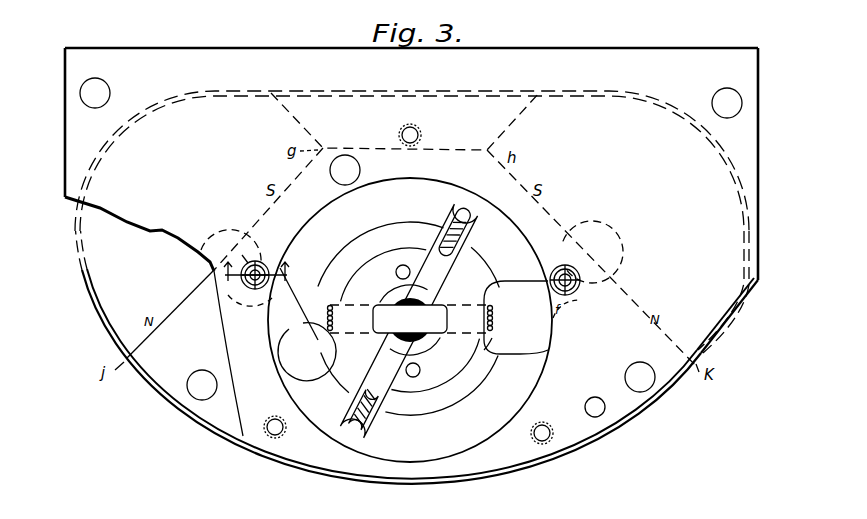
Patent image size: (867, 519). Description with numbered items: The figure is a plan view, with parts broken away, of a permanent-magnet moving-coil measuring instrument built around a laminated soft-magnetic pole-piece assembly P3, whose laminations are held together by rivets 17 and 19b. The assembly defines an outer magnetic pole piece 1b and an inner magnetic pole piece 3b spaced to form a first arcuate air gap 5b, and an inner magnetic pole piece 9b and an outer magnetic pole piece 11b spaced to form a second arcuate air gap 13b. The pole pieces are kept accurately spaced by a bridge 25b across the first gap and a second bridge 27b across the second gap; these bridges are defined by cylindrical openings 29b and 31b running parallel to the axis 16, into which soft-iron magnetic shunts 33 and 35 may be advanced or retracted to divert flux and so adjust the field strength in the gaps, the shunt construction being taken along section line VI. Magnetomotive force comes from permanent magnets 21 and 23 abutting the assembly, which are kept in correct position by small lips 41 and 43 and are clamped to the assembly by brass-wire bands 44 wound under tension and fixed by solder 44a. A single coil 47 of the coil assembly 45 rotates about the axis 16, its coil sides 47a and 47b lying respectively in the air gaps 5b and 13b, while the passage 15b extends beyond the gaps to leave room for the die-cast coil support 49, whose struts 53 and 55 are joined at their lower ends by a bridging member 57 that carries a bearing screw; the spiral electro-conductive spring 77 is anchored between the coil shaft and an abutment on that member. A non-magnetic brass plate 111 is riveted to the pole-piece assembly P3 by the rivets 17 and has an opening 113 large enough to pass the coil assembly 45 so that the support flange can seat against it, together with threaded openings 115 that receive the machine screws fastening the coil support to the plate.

The brass plate 111 is at (721, 48).
The bands 44 is at (505, 476).
The solder 44a is at (84, 292).
The permanent magnet 23 is at (714, 355).
The permanent magnet 21 is at (110, 312).
The pole-piece assembly P3 is at (228, 428).
The lip 41 is at (322, 148).
The lip 43 is at (491, 148).
The rivets 17 is at (360, 169).
The threaded openings 115 is at (421, 131).
The magnetic shunt 33 is at (264, 262).
The bridge 25b is at (231, 245).
The cylindrical opening 29b is at (237, 303).
The section line VI is at (257, 271).
The magnetic shunt 35 is at (564, 274).
The bridge 27b is at (620, 254).
The cylindrical opening 31b is at (582, 317).
The opening 113 is at (548, 370).
The inner magnetic pole piece 3b is at (378, 252).
The air gap 13b is at (490, 368).
The bridging member 57 is at (392, 407).
The air gap 5b is at (345, 284).
The inner magnetic pole piece 9b is at (455, 395).
The spiral electro-conductive spring 77 is at (440, 345).
The rivets 19b is at (406, 266).
The passage 15b is at (458, 258).
The coil support 49 is at (470, 229).
The strut 55 is at (452, 221).
The strut 53 is at (370, 430).
The axis 16 is at (413, 320).
The coil side 47a is at (334, 300).
The coil side 47b is at (497, 350).
The coil 47 is at (307, 352).
The outer magnetic pole piece 1b is at (316, 314).
The coil assembly 45 is at (504, 308).
The outer magnetic pole piece 11b is at (497, 334).